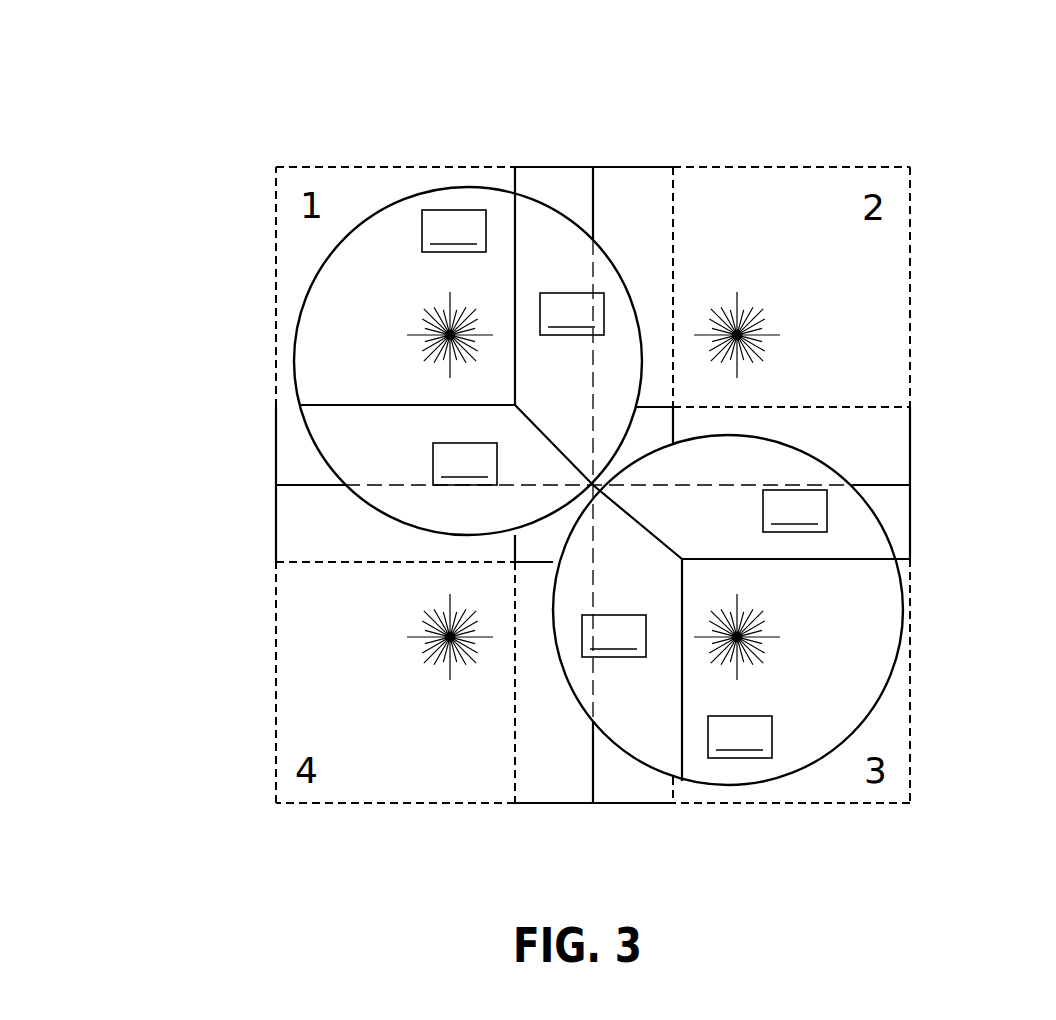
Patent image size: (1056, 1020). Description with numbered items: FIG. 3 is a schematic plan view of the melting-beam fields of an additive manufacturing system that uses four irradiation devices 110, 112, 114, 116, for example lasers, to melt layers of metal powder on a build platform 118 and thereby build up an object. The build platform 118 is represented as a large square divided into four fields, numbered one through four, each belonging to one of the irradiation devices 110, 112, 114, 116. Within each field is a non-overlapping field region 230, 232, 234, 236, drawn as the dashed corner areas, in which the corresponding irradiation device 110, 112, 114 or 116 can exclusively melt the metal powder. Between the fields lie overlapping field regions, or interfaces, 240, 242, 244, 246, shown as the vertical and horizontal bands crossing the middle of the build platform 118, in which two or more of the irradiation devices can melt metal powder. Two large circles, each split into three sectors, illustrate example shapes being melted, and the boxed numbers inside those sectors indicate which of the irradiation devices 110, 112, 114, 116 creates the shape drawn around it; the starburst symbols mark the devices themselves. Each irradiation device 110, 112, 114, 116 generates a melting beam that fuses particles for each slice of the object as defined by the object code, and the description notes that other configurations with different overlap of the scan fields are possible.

The irradiation device 110 is at (440, 328).
The irradiation device 112 is at (748, 330).
The irradiation device 114 is at (742, 642).
The irradiation device 116 is at (440, 630).
The build platform 118 is at (885, 168).
The non-overlapping field region 230 is at (341, 198).
The non-overlapping field region 232 is at (887, 270).
The non-overlapping field region 234 is at (818, 775).
The non-overlapping field region 236 is at (303, 710).
The overlapping field region 240 is at (637, 128).
The overlapping field region 242 is at (943, 447).
The overlapping field region 244 is at (620, 838).
The overlapping field region 246 is at (239, 536).